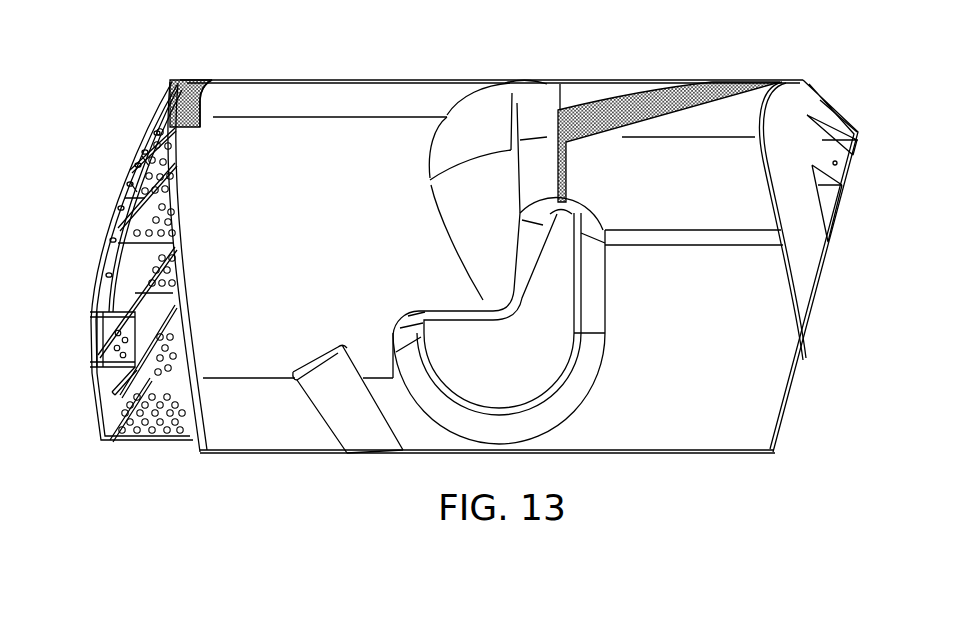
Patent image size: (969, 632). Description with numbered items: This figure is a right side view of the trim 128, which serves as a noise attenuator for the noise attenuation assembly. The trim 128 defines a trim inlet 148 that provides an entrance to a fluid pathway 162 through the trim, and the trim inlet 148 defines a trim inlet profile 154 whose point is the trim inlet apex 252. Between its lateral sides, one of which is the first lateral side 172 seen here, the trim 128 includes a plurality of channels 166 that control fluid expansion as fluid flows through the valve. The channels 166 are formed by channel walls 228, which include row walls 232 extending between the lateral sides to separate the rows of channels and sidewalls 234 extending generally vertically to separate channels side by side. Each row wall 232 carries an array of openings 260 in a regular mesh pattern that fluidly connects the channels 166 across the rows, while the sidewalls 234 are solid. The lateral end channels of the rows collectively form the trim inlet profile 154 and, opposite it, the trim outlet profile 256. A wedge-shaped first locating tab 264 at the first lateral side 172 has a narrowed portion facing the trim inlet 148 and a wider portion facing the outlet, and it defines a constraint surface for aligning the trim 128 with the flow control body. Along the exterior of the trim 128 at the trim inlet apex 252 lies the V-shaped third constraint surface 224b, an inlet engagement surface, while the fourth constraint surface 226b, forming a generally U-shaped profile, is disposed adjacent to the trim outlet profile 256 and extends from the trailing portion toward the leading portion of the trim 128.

The trim 128 is at (403, 82).
The trim inlet 148 is at (103, 323).
The trim inlet profile 154 is at (97, 260).
The fluid pathway 162 is at (109, 290).
The plurality of channels 166 is at (133, 150).
The first lateral side 172 is at (257, 413).
The third constraint surface 224b is at (207, 82).
The fourth constraint surface 226b is at (661, 97).
The channel walls 228 is at (123, 200).
The row walls 232 is at (103, 380).
The sidewalls 234 is at (100, 387).
The trim inlet apex 252 is at (173, 83).
The trim outlet profile 256 is at (813, 300).
The openings 260 is at (170, 427).
The first locating tab 264 is at (335, 372).